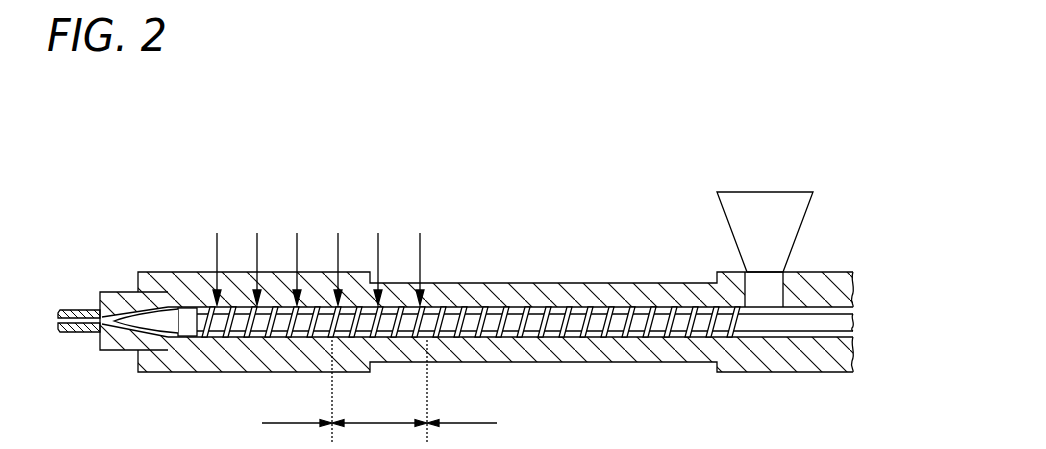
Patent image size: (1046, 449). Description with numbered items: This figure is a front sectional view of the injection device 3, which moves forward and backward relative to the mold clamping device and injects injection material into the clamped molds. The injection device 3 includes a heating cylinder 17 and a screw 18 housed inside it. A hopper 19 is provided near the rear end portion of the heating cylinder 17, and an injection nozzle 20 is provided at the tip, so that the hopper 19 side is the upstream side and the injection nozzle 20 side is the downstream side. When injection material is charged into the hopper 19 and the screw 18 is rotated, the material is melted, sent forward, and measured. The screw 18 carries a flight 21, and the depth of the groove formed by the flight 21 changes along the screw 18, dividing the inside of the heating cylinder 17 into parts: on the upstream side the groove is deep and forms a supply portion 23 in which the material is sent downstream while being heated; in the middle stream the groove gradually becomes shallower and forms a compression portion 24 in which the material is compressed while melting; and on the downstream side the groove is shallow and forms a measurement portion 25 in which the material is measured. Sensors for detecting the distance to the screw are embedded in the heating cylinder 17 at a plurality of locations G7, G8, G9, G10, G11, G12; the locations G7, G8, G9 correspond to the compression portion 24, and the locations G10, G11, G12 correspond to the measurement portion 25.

The injection device 3 is at (452, 229).
The heating cylinder 17 is at (556, 283).
The screw 18 is at (627, 307).
The hopper 19 is at (752, 191).
The injection nozzle 20 is at (77, 305).
The flight 21 is at (500, 307).
The supply portion 23 is at (462, 435).
The compression portion 24 is at (379, 394).
The measurement portion 25 is at (297, 394).
The location G7 is at (421, 260).
The location G8 is at (380, 260).
The location G9 is at (342, 260).
The location G10 is at (300, 258).
The location G11 is at (259, 260).
The location G12 is at (203, 259).